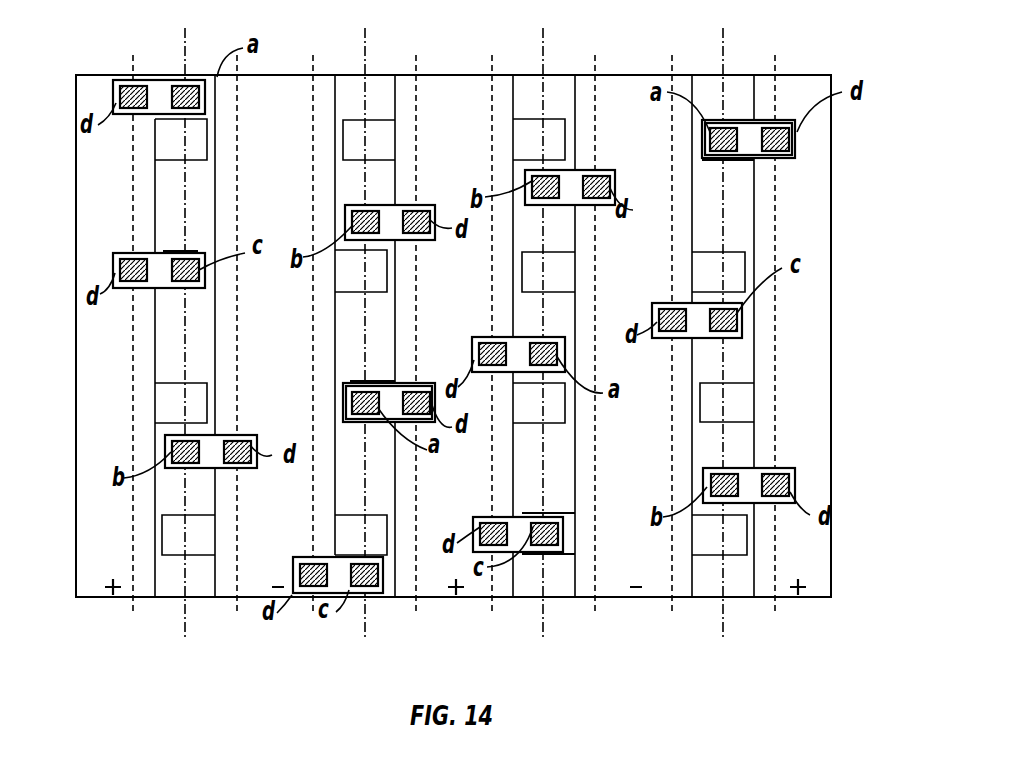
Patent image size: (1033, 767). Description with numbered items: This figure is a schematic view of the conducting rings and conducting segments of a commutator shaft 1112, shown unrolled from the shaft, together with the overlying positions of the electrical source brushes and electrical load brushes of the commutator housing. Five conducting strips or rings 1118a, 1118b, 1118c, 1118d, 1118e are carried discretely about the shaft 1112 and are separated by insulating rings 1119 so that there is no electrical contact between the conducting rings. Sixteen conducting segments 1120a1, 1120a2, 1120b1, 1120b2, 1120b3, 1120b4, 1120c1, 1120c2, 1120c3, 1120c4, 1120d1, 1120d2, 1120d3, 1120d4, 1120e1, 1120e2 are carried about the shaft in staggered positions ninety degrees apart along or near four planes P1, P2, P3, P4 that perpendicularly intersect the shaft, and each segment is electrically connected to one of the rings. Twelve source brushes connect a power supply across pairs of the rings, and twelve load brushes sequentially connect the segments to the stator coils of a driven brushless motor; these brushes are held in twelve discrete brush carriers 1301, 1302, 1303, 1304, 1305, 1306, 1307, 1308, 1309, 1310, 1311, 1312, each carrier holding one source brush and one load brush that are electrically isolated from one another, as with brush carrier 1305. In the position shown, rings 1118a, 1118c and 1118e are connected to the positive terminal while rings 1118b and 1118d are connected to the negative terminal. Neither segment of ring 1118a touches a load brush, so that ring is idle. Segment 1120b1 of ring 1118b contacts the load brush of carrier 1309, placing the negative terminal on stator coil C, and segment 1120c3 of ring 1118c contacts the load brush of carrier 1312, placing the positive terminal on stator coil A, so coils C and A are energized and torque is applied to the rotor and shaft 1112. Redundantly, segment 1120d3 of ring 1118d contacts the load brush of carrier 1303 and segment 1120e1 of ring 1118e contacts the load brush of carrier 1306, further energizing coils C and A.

The commutator shaft 1112 is at (805, 160).
The conducting ring 1118a is at (152, 362).
The conducting ring 1118b is at (305, 153).
The conducting ring 1118c is at (488, 182).
The conducting ring 1118d is at (665, 292).
The conducting ring 1118e is at (827, 352).
The insulating rings 1119 is at (212, 198).
The conducting segment 1120a1 is at (197, 142).
The conducting segment 1120a2 is at (188, 391).
The conducting segment 1120b1 is at (188, 252).
The conducting segment 1120b2 is at (352, 270).
The conducting segment 1120b3 is at (193, 543).
The conducting segment 1120b4 is at (347, 522).
The conducting segment 1120c1 is at (376, 131).
The conducting segment 1120c2 is at (553, 133).
The conducting segment 1120c3 is at (377, 383).
The conducting segment 1120c4 is at (538, 412).
The conducting segment 1120d1 is at (556, 267).
The conducting segment 1120d2 is at (715, 268).
The conducting segment 1120d3 is at (568, 553).
The conducting segment 1120d4 is at (735, 540).
The conducting segment 1120e1 is at (733, 155).
The conducting segment 1120e2 is at (735, 400).
The brush carrier 1301 is at (217, 433).
The brush carrier 1302 is at (787, 503).
The brush carrier 1303 is at (503, 516).
The brush carrier 1304 is at (332, 557).
The brush carrier 1305 is at (145, 76).
The brush carrier 1306 is at (785, 120).
The brush carrier 1307 is at (530, 172).
The brush carrier 1308 is at (352, 207).
The brush carrier 1309 is at (143, 253).
The brush carrier 1310 is at (740, 340).
The brush carrier 1311 is at (500, 337).
The brush carrier 1312 is at (352, 388).
The plane P1 is at (186, 40).
The plane P2 is at (366, 42).
The plane P3 is at (545, 42).
The plane P4 is at (725, 42).